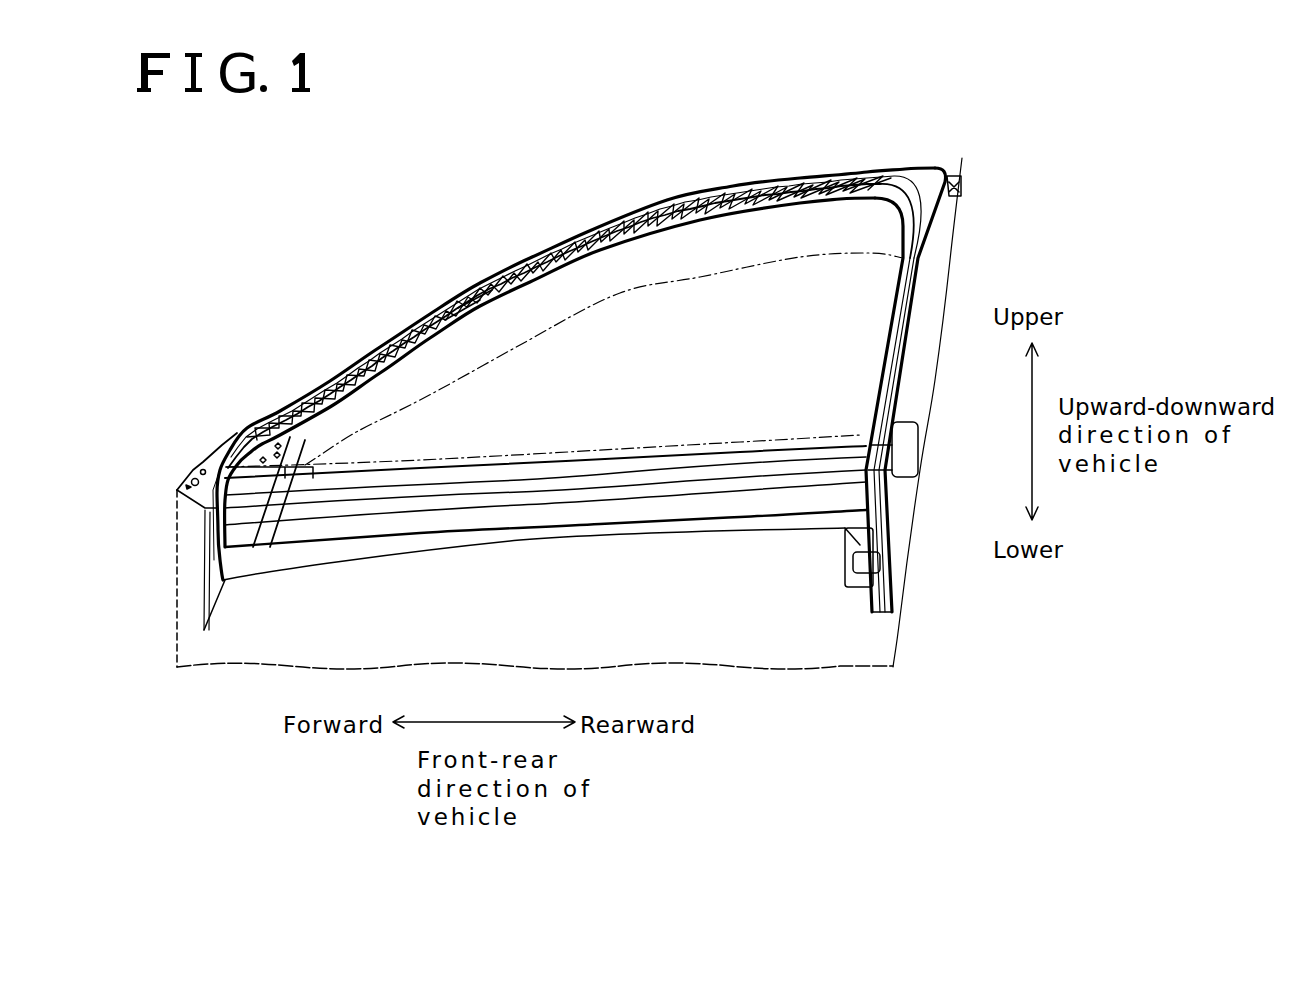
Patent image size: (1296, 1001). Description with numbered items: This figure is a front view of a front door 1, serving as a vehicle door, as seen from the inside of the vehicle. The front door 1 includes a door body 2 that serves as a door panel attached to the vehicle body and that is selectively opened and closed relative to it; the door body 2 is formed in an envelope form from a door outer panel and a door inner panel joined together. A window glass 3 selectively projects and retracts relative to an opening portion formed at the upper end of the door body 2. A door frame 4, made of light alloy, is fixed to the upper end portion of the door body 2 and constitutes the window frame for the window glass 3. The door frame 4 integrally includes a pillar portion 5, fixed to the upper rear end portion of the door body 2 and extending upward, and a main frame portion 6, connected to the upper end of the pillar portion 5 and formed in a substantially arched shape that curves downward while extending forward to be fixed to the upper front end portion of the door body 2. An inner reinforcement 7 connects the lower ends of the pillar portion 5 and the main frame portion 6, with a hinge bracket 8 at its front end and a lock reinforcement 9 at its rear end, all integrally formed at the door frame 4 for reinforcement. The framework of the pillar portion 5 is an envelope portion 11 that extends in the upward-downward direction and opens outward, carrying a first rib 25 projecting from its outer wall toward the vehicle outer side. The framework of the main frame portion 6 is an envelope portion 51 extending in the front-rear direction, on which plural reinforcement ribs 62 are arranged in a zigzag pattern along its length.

The front door 1 is at (259, 201).
The door body 2 is at (177, 532).
The window glass 3 is at (417, 397).
The door frame 4 is at (964, 166).
The pillar portion 5 is at (953, 256).
The main frame portion 6 is at (588, 228).
The reinforcement rib 62 is at (493, 272).
The inner reinforcement 7 is at (533, 515).
The hinge bracket 8 is at (216, 605).
The lock reinforcement 9 is at (867, 587).
The envelope portion 11 is at (882, 368).
The first rib 25 is at (873, 418).
The envelope portion 51 is at (797, 178).